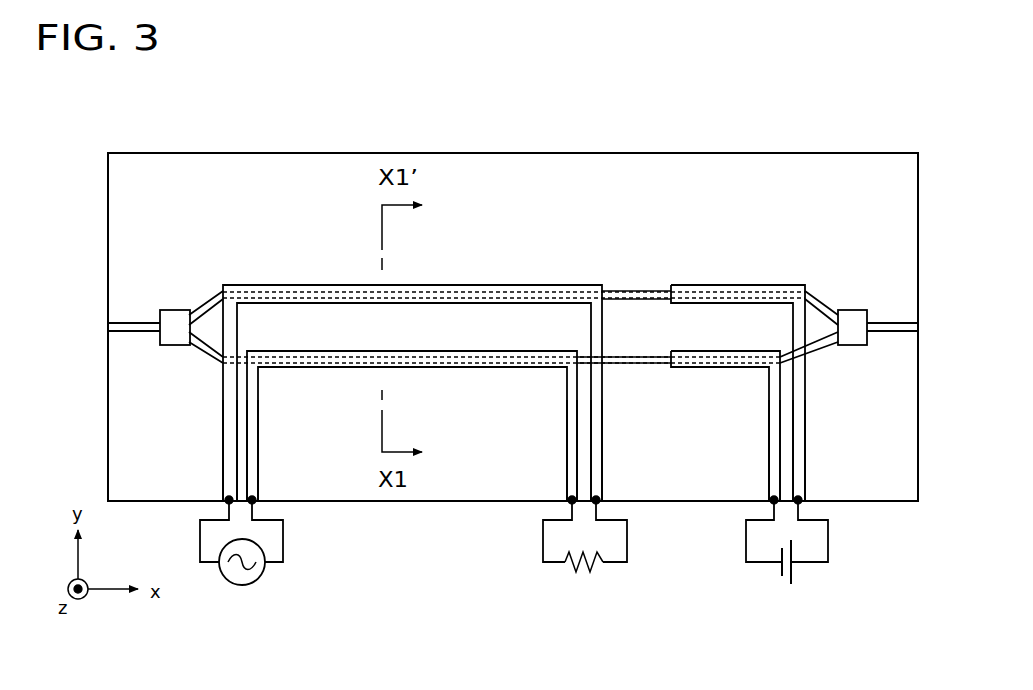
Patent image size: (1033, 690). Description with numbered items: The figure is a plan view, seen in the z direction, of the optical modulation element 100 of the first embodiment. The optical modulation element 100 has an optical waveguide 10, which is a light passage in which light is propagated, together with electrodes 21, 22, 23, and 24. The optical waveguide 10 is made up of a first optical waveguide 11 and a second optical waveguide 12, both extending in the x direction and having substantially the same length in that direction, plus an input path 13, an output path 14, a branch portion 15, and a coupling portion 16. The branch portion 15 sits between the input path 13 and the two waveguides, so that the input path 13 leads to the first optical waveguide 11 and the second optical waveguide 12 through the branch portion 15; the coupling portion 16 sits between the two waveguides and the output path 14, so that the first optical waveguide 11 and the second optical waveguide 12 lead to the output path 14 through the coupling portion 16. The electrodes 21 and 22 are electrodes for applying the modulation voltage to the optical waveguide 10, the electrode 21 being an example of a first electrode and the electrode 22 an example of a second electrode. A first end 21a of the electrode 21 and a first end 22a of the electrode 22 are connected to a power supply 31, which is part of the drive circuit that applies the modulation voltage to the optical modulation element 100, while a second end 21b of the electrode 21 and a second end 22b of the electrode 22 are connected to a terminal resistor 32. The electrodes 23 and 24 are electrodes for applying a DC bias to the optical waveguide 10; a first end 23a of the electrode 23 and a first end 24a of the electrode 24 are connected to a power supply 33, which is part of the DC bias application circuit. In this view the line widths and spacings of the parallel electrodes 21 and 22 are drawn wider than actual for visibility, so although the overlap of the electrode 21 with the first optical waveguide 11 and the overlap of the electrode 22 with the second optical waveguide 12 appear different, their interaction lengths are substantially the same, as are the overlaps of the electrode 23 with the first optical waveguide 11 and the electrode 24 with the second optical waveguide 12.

The optical modulation element 100 is at (820, 134).
The optical waveguide 10 is at (836, 258).
The first optical waveguide 11 is at (293, 370).
The second optical waveguide 12 is at (295, 286).
The input path 13 is at (130, 335).
The output path 14 is at (890, 322).
The branch portion 15 is at (175, 308).
The coupling portion 16 is at (851, 348).
The electrode 21 is at (465, 351).
The electrode 22 is at (465, 286).
The electrode 23 is at (688, 351).
The electrode 24 is at (685, 286).
The first end 21a is at (258, 488).
The second end 21b is at (566, 487).
The first end 22a is at (224, 487).
The second end 22b is at (602, 488).
The first end 23a is at (768, 487).
The first end 24a is at (805, 488).
The power supply 31 is at (265, 572).
The terminal resistor 32 is at (600, 570).
The power supply 33 is at (792, 575).